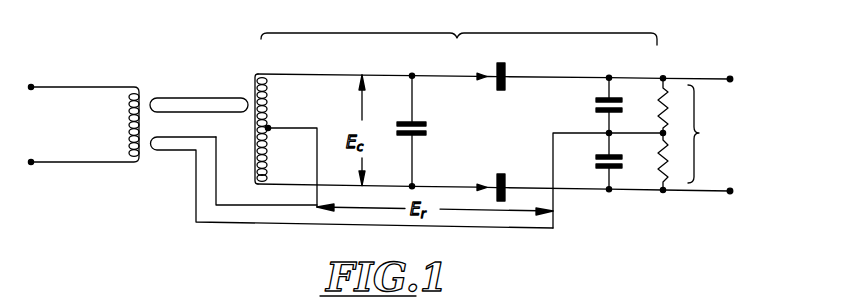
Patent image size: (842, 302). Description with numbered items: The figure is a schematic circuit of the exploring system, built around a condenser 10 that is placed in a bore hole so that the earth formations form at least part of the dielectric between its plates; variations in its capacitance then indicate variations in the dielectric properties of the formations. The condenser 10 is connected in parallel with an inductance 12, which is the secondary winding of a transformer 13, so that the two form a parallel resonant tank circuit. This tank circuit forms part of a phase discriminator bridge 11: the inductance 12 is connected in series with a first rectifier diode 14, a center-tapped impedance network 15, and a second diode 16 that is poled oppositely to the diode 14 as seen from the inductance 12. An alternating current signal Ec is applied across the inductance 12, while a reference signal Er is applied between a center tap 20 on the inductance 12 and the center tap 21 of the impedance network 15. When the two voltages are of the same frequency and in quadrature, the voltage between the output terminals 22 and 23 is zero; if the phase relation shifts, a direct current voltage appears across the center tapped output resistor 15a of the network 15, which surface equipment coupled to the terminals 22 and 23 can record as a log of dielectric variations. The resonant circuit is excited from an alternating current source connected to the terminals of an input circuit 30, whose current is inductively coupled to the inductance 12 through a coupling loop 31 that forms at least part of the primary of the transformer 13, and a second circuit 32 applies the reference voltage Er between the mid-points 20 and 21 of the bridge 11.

The condenser 10 is at (427, 129).
The phase discriminator bridge 11 is at (459, 26).
The inductance 12 is at (269, 101).
The transformer 13 is at (256, 52).
The first rectifier diode 14 is at (505, 73).
The center-tapped impedance network 15 is at (661, 133).
The center tapped output resistor 15a is at (661, 161).
The second diode 16 is at (531, 161).
The center tap 20 is at (269, 129).
The center tap 21 is at (609, 133).
The output terminal 22 is at (735, 64).
The output terminal 23 is at (731, 192).
The input circuit 30 is at (87, 104).
The coupling loop 31 is at (204, 84).
The second circuit 32 is at (178, 143).